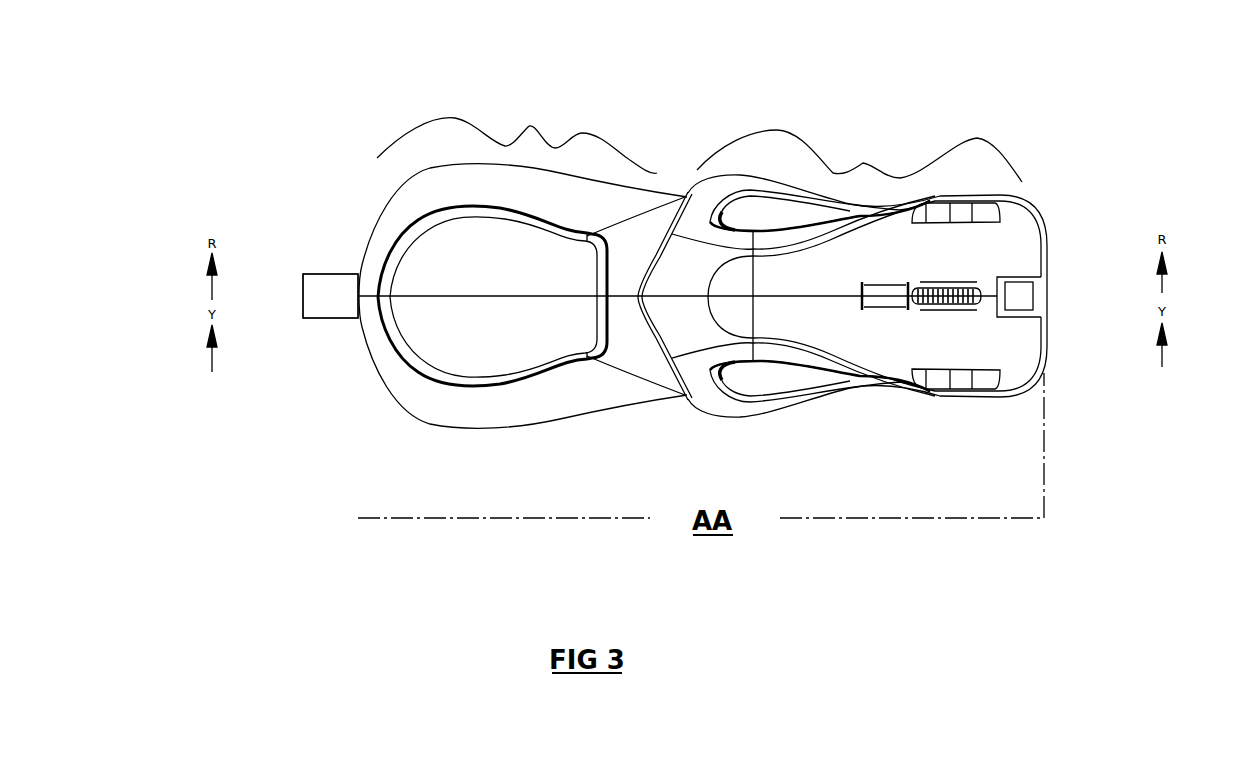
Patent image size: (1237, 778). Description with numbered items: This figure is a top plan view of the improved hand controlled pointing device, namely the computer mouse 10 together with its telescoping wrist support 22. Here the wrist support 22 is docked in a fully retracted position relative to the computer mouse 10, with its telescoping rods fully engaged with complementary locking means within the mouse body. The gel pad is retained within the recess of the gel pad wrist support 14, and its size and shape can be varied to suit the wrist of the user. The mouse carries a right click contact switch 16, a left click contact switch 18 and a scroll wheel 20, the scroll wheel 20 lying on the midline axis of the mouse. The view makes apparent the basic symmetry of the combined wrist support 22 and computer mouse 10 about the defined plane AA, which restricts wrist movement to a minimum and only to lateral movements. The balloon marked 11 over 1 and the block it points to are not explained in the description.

The computer mouse 10 is at (863, 163).
The wrist support 22 is at (528, 127).
The gel pad wrist support 14 is at (492, 296).
The right click contact switch 16 is at (956, 357).
The left click contact switch 18 is at (956, 229).
The scroll wheel 20 is at (963, 289).
The connector block 11 is at (342, 293).
The device 1 is at (290, 237).